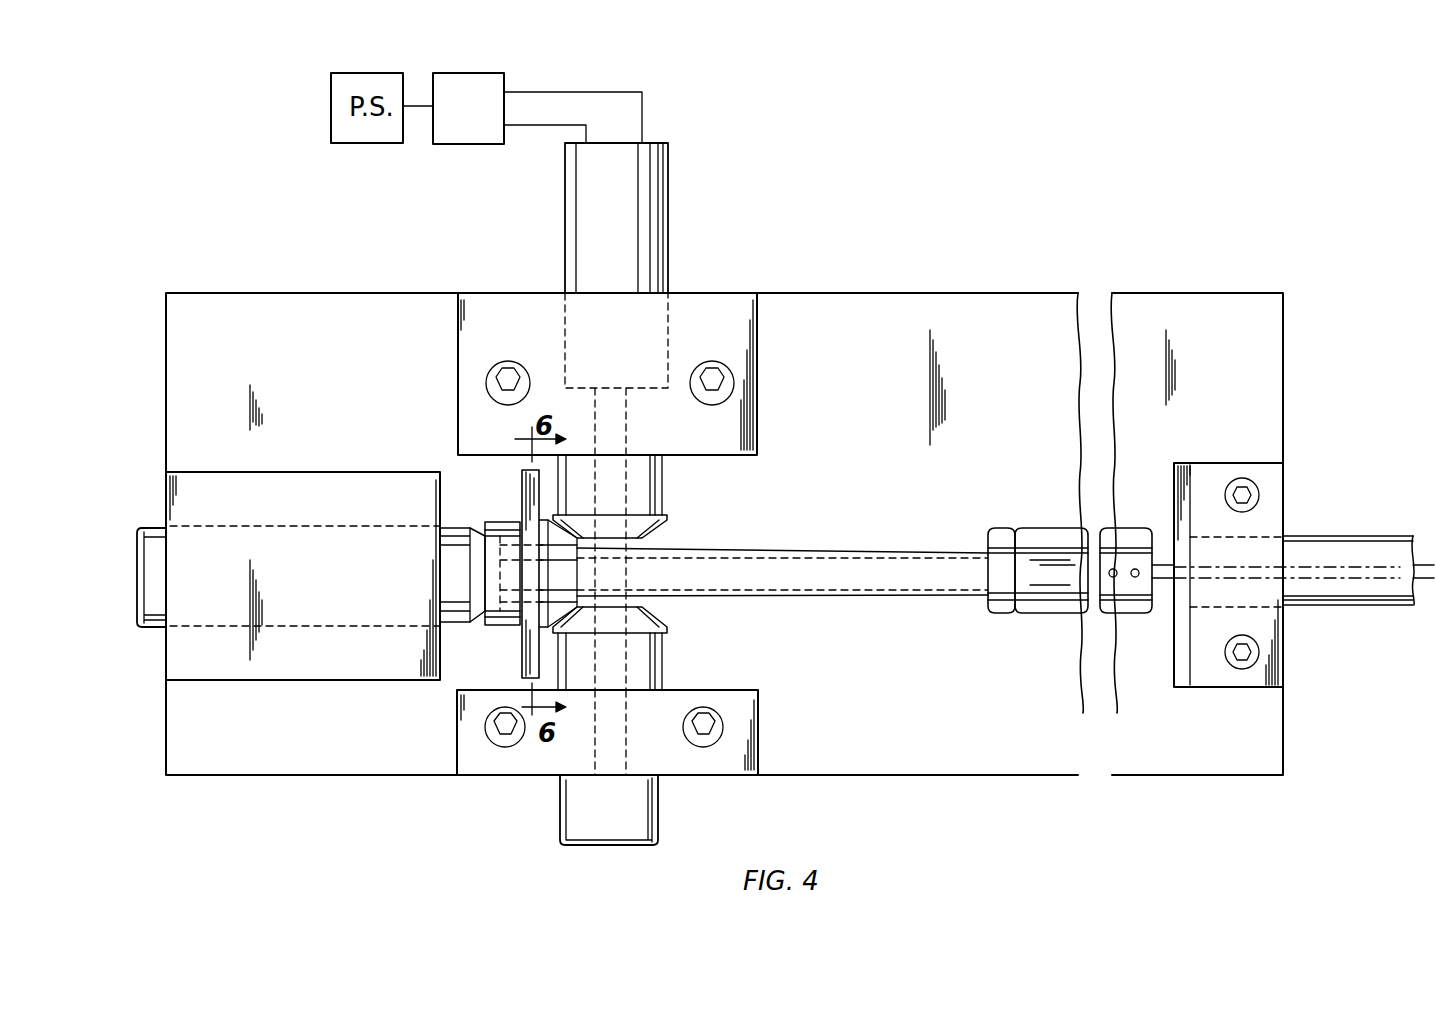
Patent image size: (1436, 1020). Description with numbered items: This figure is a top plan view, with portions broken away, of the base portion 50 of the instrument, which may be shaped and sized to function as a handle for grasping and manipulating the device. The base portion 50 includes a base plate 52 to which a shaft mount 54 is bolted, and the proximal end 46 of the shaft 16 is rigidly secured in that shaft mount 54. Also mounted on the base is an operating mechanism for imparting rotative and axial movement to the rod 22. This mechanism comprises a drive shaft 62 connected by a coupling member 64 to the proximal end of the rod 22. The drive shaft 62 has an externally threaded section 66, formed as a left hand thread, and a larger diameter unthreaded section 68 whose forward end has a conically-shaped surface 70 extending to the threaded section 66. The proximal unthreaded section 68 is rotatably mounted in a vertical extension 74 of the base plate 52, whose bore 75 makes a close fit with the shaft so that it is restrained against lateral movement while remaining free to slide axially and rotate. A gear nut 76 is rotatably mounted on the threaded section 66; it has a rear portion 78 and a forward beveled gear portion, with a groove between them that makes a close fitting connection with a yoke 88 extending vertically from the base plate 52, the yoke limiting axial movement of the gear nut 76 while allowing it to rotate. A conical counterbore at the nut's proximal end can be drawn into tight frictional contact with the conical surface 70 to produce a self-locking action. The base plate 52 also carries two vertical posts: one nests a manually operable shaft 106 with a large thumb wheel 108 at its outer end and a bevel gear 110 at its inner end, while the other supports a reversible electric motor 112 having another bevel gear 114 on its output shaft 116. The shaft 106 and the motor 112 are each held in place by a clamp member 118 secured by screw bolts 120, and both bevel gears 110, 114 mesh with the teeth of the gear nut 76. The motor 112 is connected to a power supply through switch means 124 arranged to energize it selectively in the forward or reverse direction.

The shaft 16 is at (1323, 536).
The rod 22 is at (1423, 578).
The proximal end of shaft 46 is at (1243, 607).
The base portion 50 is at (289, 292).
The base plate 52 is at (328, 394).
The shaft mount 54 is at (1216, 463).
The drive shaft 62 is at (948, 547).
The coupling member 64 is at (1094, 540).
The externally threaded section 66 is at (870, 552).
The unthreaded section 68 is at (154, 528).
The conically-shaped surface 70 is at (470, 572).
The vertical extension 74 is at (371, 472).
The bore 75 is at (338, 498).
The gear nut 76 is at (489, 630).
The rear portion of gear nut 78 is at (504, 522).
The yoke 88 is at (522, 646).
The manually operable shaft 106 is at (628, 666).
The thumb wheel 108 is at (660, 812).
The bevel gear 110 is at (643, 609).
The electric motor 112 is at (667, 240).
The bevel gear 114 is at (648, 514).
The output shaft 116 is at (630, 412).
The clamp member 118 is at (757, 385).
The screw bolts 120 is at (512, 362).
The switch means 124 is at (484, 120).